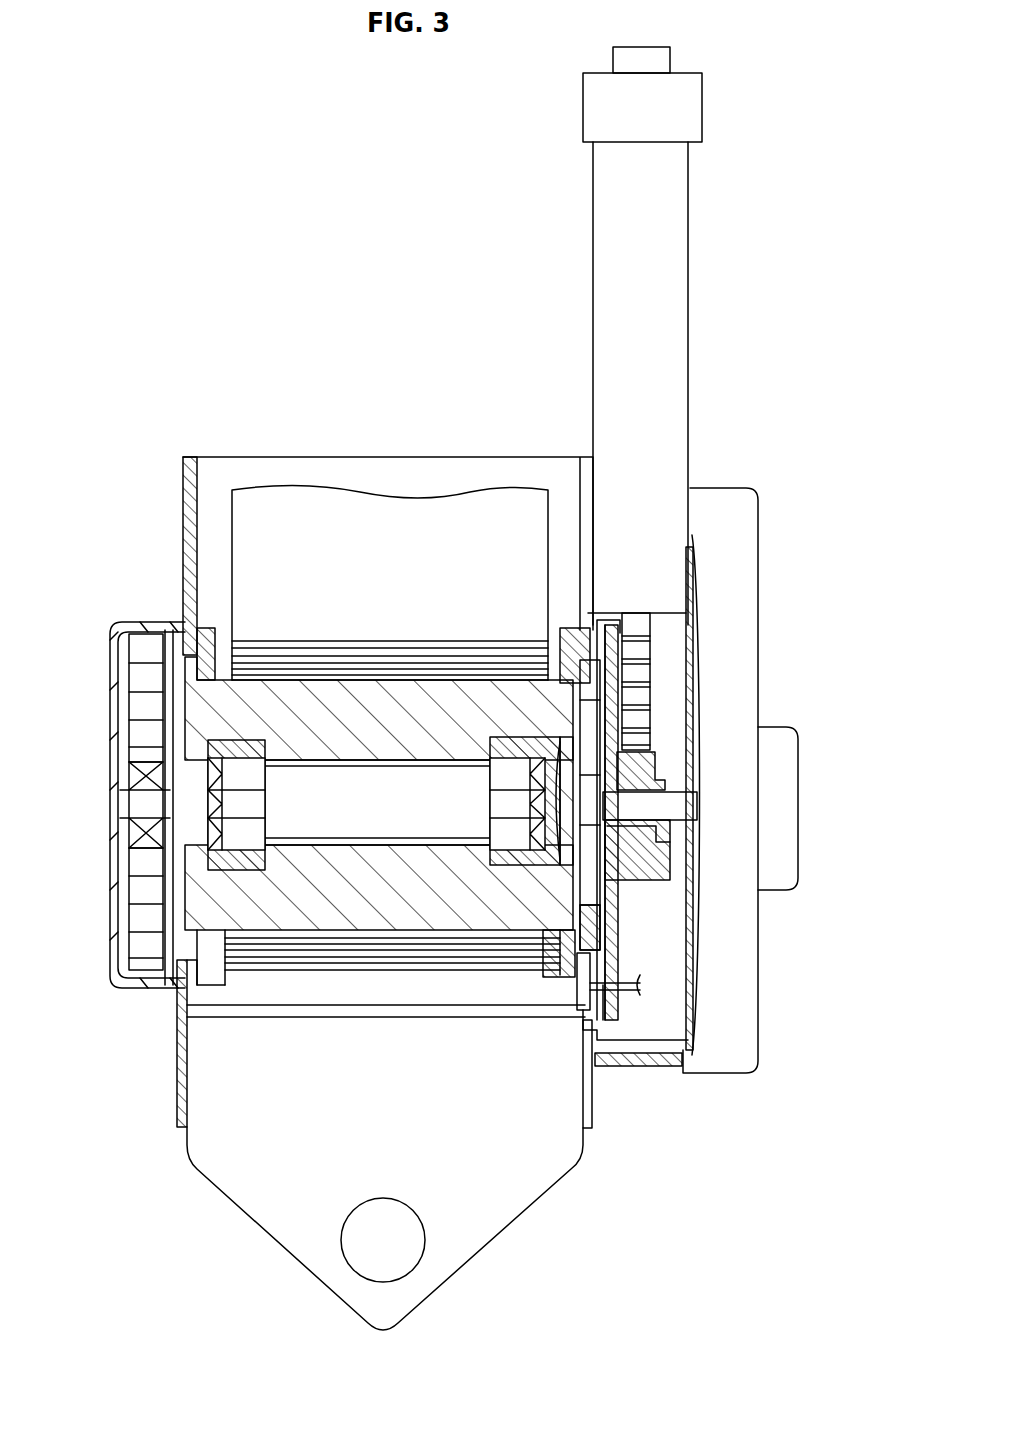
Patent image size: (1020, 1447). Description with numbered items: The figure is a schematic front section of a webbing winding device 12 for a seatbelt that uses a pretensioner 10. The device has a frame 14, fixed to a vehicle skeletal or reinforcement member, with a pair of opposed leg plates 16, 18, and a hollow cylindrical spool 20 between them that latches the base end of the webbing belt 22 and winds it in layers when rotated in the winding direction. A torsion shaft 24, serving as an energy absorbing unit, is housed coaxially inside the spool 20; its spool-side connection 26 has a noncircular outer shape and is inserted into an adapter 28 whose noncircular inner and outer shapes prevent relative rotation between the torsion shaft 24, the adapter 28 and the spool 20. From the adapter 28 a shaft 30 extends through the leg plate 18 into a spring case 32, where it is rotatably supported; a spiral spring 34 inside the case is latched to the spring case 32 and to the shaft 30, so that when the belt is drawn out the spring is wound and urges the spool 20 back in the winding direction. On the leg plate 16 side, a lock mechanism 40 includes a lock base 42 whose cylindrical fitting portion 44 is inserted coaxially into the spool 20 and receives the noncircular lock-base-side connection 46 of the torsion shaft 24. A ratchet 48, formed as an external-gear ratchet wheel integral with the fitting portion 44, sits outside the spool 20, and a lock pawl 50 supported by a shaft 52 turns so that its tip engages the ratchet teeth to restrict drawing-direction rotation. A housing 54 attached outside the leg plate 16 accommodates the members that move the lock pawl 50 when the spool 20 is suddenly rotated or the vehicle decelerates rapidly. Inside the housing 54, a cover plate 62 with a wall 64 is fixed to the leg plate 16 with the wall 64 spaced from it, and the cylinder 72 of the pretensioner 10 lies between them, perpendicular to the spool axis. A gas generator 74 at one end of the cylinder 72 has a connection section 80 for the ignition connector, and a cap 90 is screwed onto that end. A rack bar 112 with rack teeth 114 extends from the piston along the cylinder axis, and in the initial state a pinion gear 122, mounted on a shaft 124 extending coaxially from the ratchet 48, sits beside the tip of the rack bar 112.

The pretensioner 10 is at (742, 346).
The webbing winding device 12 is at (233, 444).
The frame 14 is at (203, 1184).
The leg plate 16 is at (583, 1112).
The leg plate 18 is at (187, 1084).
The spool 20 is at (316, 912).
The webbing belt 22 is at (390, 508).
The torsion shaft 24 is at (334, 828).
The spool-side connection 26 is at (248, 776).
The adapter 28 is at (220, 746).
The shaft 30 is at (132, 800).
The spring case 32 is at (132, 988).
The spiral spring 34 is at (138, 916).
The lock mechanism 40 is at (760, 486).
The lock base 42 is at (602, 900).
The fitting portion 44 is at (530, 748).
The lock-base-side connection 46 is at (510, 840).
The ratchet 48 is at (602, 928).
The lock pawl 50 is at (574, 1018).
The shaft 52 is at (260, 1008).
The housing 54 is at (758, 558).
The cover plate 62 is at (650, 1062).
The wall 64 is at (694, 656).
The cylinder 72 is at (596, 412).
The gas generator 74 is at (674, 50).
The connection section 80 is at (616, 62).
The cap 90 is at (694, 120).
The rack bar 112 is at (658, 636).
The rack teeth 114 is at (650, 742).
The pinion gear 122 is at (660, 782).
The shaft 124 is at (688, 812).